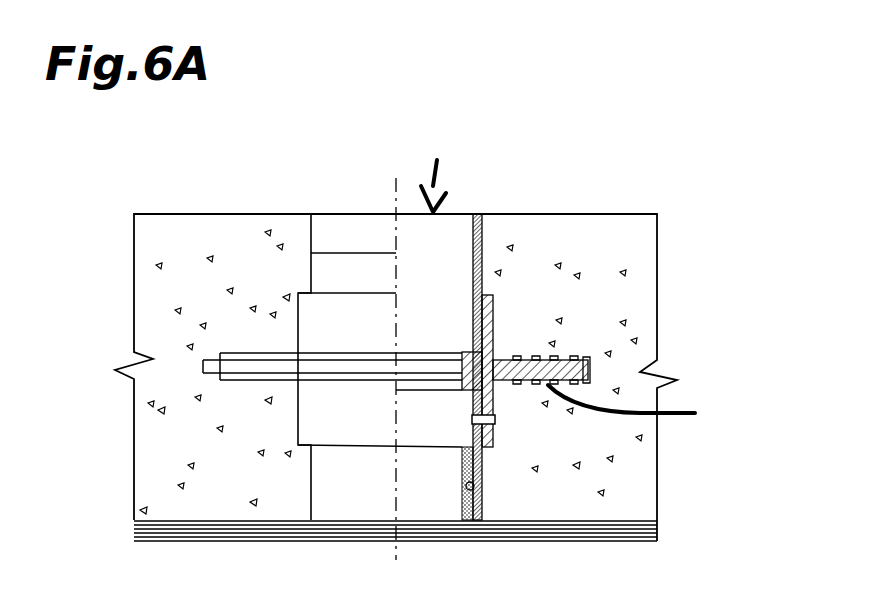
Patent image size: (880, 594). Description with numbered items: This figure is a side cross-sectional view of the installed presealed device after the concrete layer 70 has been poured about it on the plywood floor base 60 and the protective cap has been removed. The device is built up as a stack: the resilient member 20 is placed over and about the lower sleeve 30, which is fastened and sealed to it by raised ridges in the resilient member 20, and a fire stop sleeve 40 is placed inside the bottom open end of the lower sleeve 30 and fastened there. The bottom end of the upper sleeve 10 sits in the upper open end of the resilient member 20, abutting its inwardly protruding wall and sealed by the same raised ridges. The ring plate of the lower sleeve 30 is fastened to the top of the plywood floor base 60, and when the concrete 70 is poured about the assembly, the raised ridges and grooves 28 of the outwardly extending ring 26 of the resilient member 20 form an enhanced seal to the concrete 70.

The upper sleeve 10 is at (483, 238).
The resilient member 20 is at (493, 330).
The outwardly extending ring 26 is at (593, 367).
The raised ridges and grooves 28 is at (655, 412).
The lower sleeve 30 is at (478, 412).
The fire stop sleeve 40 is at (455, 500).
The plywood floor base 60 is at (635, 530).
The concrete layer 70 is at (620, 260).